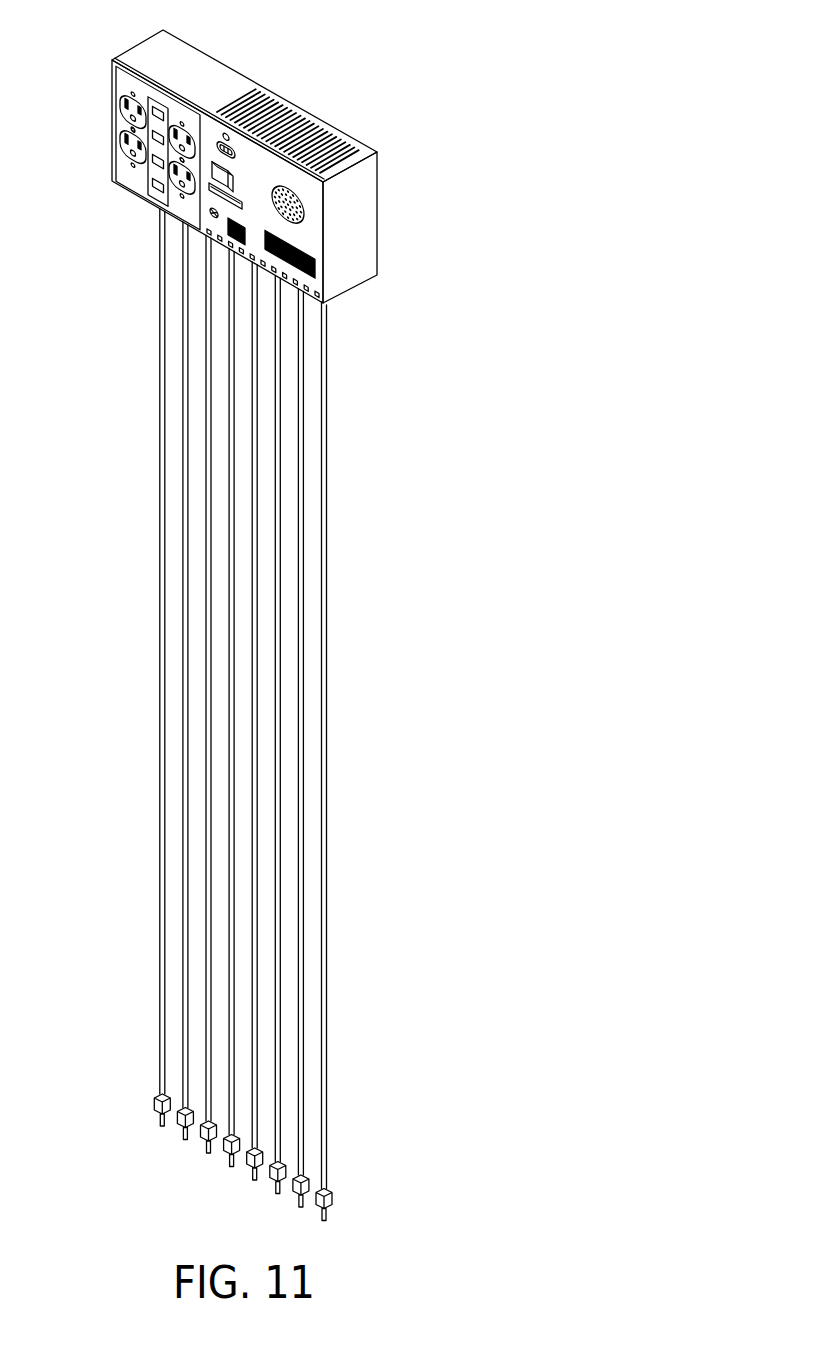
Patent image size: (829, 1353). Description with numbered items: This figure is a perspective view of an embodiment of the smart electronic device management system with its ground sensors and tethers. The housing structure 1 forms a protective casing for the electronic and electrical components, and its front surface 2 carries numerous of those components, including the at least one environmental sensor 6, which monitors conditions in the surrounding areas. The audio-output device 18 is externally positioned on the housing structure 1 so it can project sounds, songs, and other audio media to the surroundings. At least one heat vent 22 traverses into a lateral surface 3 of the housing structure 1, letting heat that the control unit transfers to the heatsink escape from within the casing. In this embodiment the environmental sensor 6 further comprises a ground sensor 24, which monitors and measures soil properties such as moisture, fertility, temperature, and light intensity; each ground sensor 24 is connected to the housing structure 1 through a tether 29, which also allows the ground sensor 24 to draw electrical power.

The housing structure 1 is at (100, 136).
The front surface 2 is at (309, 235).
The lateral surface 3 is at (167, 38).
The environmental sensor 6 is at (226, 150).
The audio-output device 18 is at (288, 204).
The heat vent 22 is at (258, 90).
The ground sensor 24 is at (154, 1102).
The tether 29 is at (159, 847).